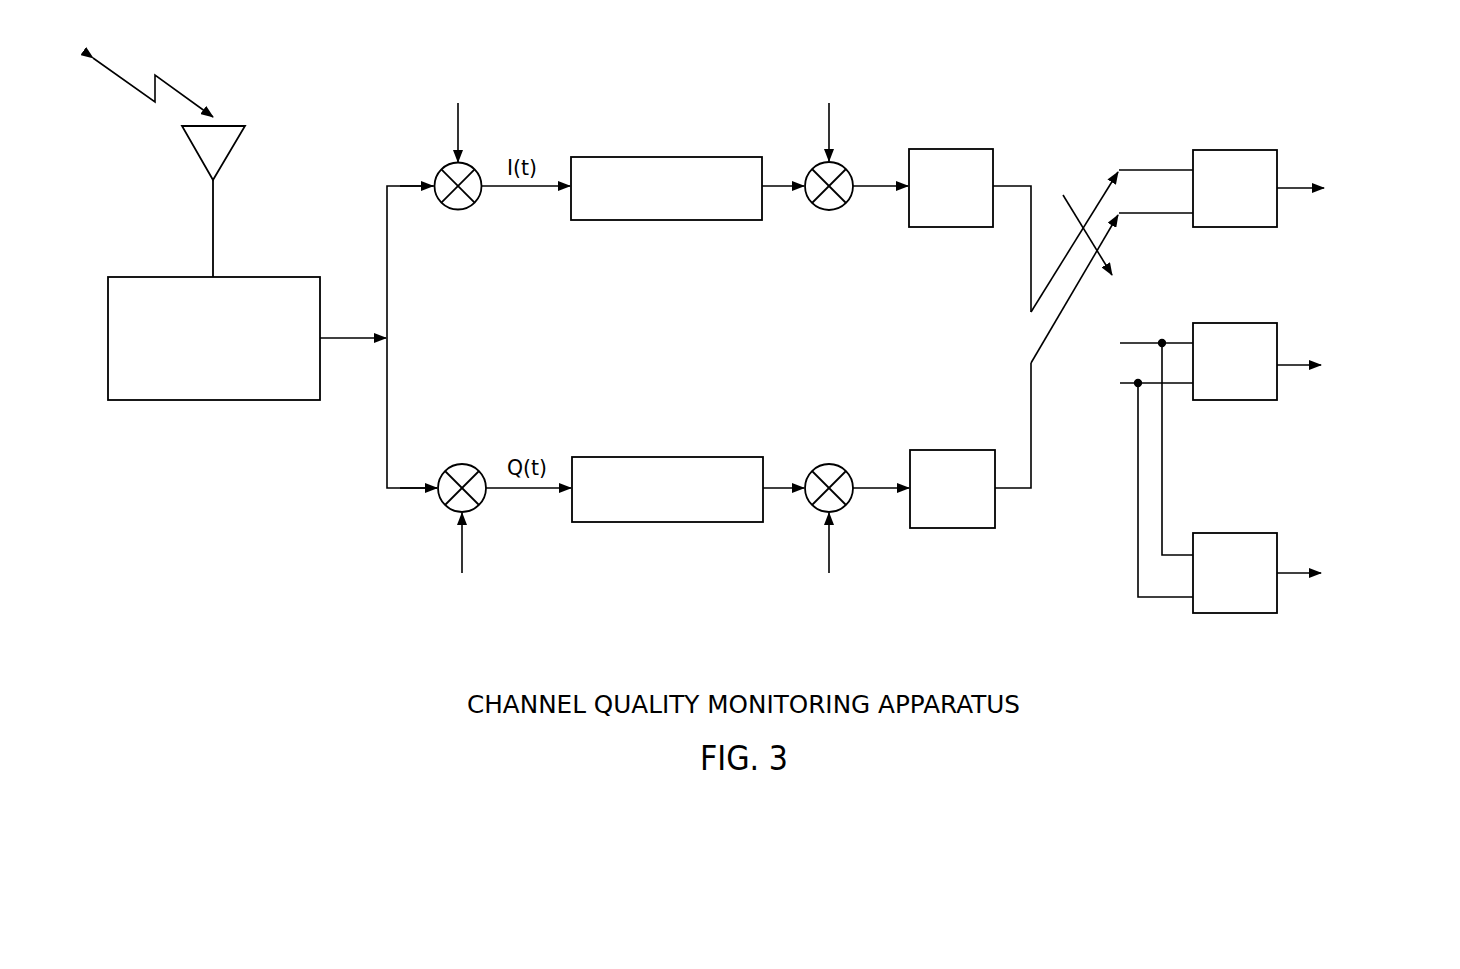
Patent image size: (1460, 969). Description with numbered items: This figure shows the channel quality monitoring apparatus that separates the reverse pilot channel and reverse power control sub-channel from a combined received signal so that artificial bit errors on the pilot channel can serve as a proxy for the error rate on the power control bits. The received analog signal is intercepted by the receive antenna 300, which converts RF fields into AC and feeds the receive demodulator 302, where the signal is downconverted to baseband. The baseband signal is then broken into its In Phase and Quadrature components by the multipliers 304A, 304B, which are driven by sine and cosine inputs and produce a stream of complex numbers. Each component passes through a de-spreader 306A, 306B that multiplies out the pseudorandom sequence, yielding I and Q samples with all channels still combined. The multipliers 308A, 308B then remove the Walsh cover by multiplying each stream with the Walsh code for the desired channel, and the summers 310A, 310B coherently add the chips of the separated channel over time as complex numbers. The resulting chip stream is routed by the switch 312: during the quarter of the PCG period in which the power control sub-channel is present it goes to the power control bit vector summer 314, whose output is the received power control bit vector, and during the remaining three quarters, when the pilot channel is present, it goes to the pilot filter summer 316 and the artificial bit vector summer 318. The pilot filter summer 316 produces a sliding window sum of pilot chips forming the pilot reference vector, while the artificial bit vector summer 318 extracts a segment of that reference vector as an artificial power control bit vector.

The antenna 300 is at (220, 126).
The receive demodulator element 302 is at (177, 276).
The multiplier 304A is at (455, 211).
The multiplier 304B is at (447, 507).
The de-spreader element 306A is at (642, 157).
The de-spreader element 306B is at (643, 457).
The multiplier 308A is at (826, 211).
The multiplier 308B is at (827, 465).
The summer element 310A is at (940, 149).
The summer element 310B is at (937, 450).
The switch 312 is at (1070, 166).
The power control bit vector summer element 314 is at (1218, 150).
The pilot filter summer element 316 is at (1218, 323).
The artificial bit vector summer element 318 is at (1218, 533).